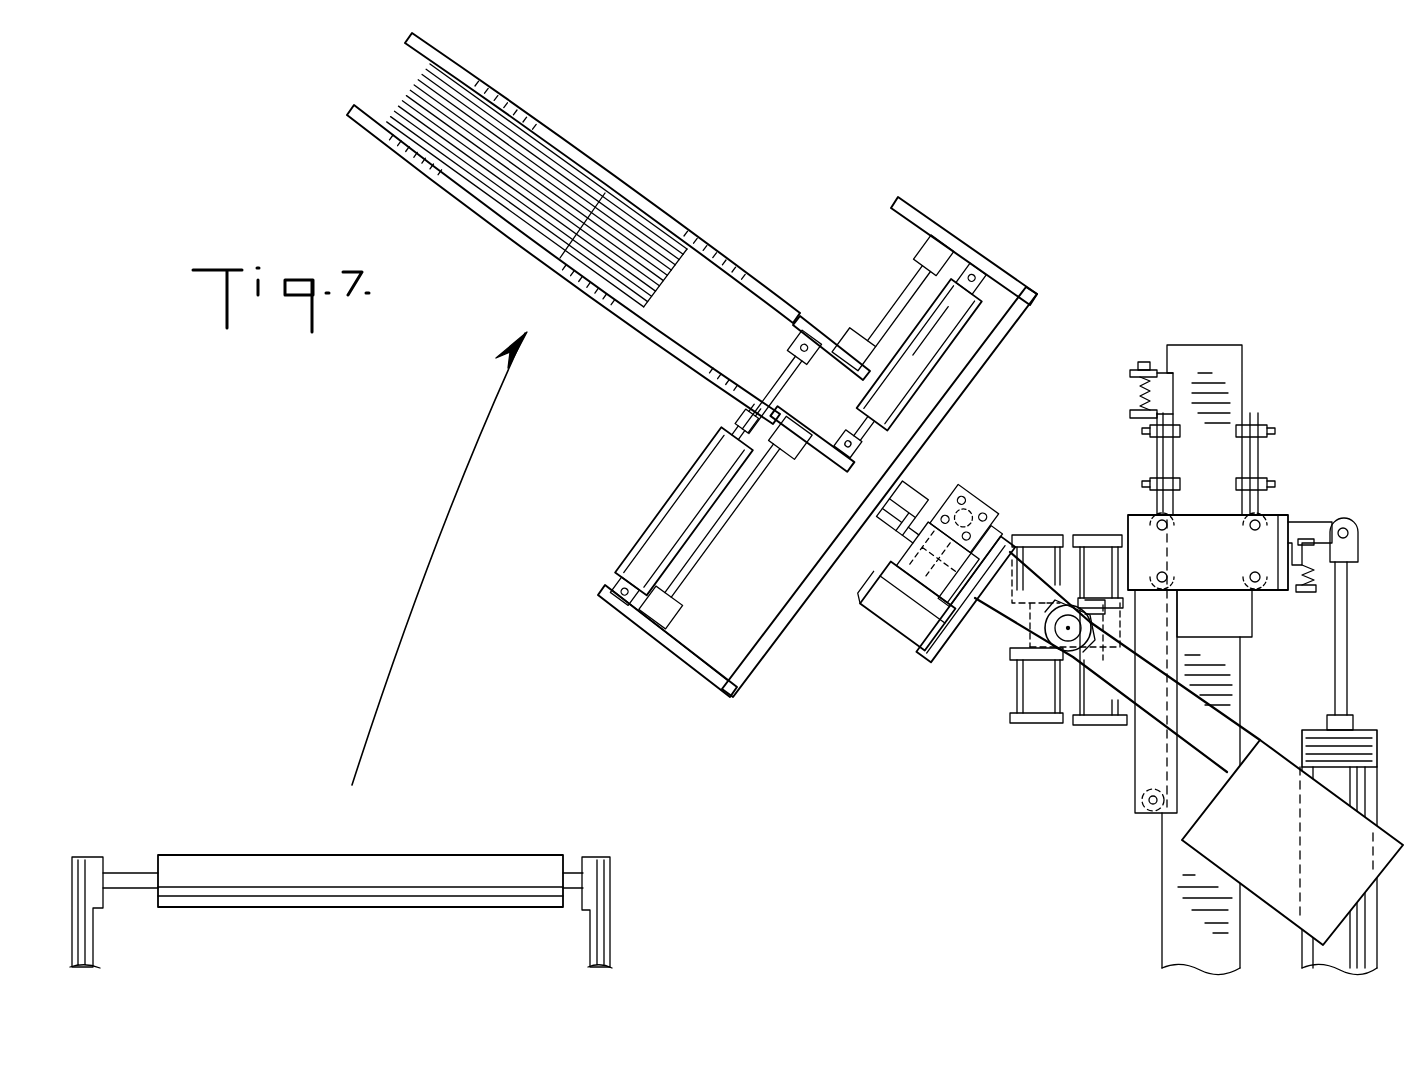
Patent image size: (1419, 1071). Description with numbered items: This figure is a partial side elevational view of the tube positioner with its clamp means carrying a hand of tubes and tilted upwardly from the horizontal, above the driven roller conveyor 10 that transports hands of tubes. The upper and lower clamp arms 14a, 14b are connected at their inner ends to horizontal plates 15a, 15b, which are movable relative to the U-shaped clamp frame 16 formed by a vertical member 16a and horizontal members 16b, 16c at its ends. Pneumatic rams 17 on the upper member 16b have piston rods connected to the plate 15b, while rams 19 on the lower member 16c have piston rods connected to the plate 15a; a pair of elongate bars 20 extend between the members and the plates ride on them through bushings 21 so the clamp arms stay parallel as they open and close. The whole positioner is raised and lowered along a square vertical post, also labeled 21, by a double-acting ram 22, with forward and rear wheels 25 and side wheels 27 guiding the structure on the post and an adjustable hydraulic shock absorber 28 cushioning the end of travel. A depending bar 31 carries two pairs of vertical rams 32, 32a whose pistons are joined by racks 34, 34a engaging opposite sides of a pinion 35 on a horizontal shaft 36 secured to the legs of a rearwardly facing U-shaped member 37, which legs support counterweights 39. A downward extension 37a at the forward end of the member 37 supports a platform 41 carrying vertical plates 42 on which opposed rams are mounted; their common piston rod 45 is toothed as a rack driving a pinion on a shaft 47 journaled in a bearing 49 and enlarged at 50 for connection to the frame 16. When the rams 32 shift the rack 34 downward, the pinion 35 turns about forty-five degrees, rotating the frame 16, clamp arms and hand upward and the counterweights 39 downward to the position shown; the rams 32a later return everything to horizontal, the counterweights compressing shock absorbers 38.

The driven roller conveyor 10 is at (243, 845).
The upper clamp arm 14a is at (615, 178).
The lower clamp arm 14b is at (617, 297).
The horizontal plate 15a is at (810, 320).
The horizontal plate 15b is at (837, 463).
The clamp frame 16 is at (855, 455).
The vertical member 16a is at (973, 387).
The upper horizontal member 16b is at (965, 245).
The lower horizontal member 16c is at (687, 653).
The pneumatic rams 17 is at (917, 380).
The rams 19 is at (670, 510).
The elongate bars 20 is at (893, 296).
The bushings / vertical post 21 is at (858, 335).
The double-acting ram 22 is at (1353, 935).
The forward and rear wheels 25 is at (1248, 570).
The side wheels 27 is at (1238, 478).
The adjustable hydraulic shock absorber 28 is at (1130, 388).
The depending bar 31 is at (1132, 780).
The rams 32 is at (1100, 700).
The rams 32a is at (1035, 710).
The rack 34 is at (1107, 613).
The rack 34a is at (1036, 598).
The pinion 35 is at (1073, 610).
The horizontal shaft 36 is at (1052, 637).
The U-shaped member 37 is at (993, 607).
The downward extension 37a is at (930, 653).
The shock absorbers 38 is at (1312, 593).
The counterweights 39 is at (1284, 851).
The platform 41 is at (905, 613).
The vertical plates 42 is at (935, 582).
The common piston rod 45 is at (973, 503).
The shaft 47 is at (910, 540).
The bearing 49 is at (997, 523).
The enlarged end 50 is at (912, 500).